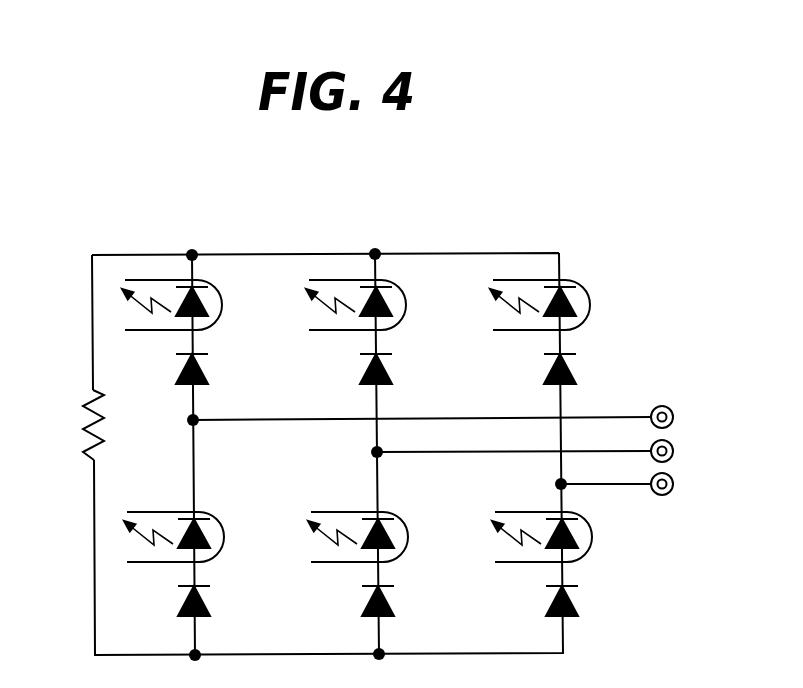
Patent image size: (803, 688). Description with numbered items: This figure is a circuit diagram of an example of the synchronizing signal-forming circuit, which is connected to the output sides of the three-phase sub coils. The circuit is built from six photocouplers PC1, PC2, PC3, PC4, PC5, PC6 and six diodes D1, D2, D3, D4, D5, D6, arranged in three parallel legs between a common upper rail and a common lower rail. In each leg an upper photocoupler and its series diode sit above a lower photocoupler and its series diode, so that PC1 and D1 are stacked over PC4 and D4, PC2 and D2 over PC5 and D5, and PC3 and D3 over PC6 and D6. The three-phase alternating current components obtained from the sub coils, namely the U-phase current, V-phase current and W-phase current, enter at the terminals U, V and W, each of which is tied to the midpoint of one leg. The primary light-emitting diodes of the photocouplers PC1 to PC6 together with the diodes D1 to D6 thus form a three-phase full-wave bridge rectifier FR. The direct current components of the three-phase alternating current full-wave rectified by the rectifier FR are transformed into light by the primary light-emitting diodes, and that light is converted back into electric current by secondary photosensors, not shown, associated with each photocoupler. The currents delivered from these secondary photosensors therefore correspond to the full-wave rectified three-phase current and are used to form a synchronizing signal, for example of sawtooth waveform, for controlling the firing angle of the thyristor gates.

The three-phase full-wave bridge rectifier FR is at (233, 221).
The photocoupler PC1 is at (198, 305).
The photocoupler PC2 is at (382, 305).
The photocoupler PC3 is at (566, 305).
The photocoupler PC4 is at (201, 537).
The photocoupler PC5 is at (385, 537).
The photocoupler PC6 is at (568, 537).
The diode D1 is at (217, 368).
The diode D2 is at (401, 368).
The diode D3 is at (585, 368).
The diode D4 is at (218, 602).
The diode D5 is at (401, 602).
The diode D6 is at (587, 602).
The U-phase U is at (442, 419).
The V-phase V is at (534, 453).
The W-phase W is at (628, 486).